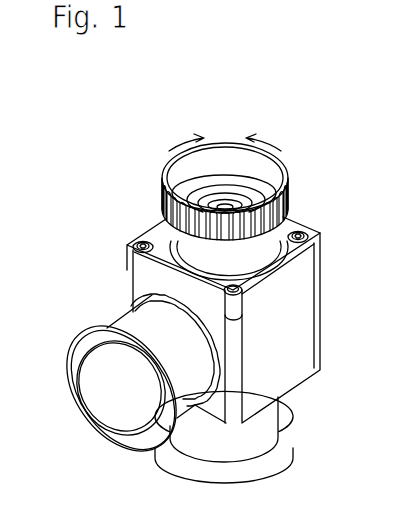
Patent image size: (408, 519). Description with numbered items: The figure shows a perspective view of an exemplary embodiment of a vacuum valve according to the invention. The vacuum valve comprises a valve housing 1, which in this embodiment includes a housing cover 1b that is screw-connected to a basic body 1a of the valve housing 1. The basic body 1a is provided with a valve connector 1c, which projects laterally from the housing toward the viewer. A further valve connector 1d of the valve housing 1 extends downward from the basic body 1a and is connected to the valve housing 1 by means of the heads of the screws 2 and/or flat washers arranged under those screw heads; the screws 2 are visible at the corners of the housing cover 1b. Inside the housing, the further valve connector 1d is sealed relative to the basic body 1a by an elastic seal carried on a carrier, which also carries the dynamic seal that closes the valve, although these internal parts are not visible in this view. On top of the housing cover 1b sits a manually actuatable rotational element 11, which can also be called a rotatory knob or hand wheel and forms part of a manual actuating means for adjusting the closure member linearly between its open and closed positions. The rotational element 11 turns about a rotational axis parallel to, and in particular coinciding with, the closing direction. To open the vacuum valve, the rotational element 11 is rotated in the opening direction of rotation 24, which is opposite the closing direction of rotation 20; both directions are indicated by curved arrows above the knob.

The valve housing 1 is at (224, 324).
The basic body 1a is at (302, 323).
The housing cover 1b is at (302, 268).
The valve connector 1c is at (148, 322).
The further valve connector 1d is at (273, 407).
The screws 2 is at (129, 246).
The rotational element 11 is at (281, 176).
The closing direction of rotation 20 is at (180, 147).
The opening direction of rotation 24 is at (270, 145).